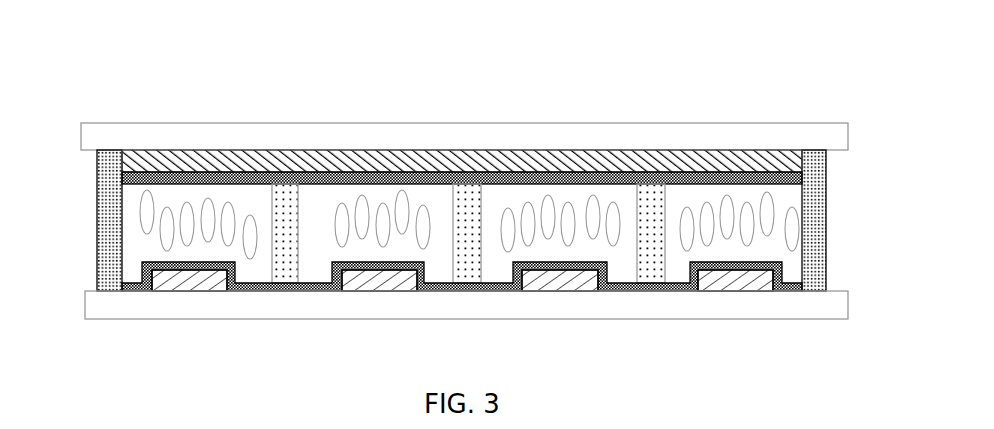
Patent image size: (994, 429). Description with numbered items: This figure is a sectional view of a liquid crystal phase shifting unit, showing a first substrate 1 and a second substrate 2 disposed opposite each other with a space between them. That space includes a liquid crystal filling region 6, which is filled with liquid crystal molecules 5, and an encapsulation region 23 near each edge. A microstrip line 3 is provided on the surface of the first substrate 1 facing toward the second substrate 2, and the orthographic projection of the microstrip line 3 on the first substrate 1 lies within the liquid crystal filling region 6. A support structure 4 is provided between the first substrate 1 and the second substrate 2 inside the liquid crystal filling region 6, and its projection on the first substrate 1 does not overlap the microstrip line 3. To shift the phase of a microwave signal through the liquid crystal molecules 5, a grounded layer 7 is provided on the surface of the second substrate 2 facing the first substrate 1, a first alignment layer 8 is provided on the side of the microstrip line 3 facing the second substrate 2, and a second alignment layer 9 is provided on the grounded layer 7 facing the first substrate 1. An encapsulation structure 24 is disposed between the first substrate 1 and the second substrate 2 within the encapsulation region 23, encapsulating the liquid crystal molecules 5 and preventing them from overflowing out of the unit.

The first substrate 1 is at (85, 305).
The second substrate 2 is at (81, 132).
The microstrip line 3 is at (190, 291).
The support structure 4 is at (282, 280).
The liquid crystal molecules 5 is at (147, 218).
The liquid crystal filling region 6 is at (796, 108).
The grounded layer 7 is at (100, 157).
The first alignment layer 8 is at (120, 283).
The second alignment layer 9 is at (97, 175).
The encapsulation region 23 is at (122, 150).
The encapsulation structure 24 is at (826, 222).